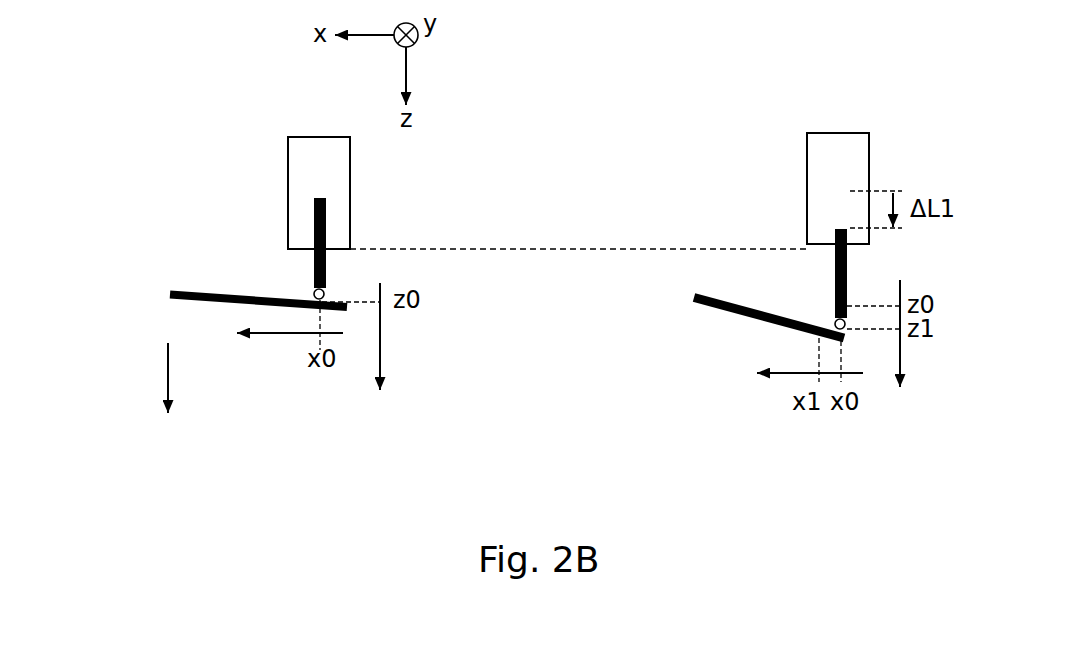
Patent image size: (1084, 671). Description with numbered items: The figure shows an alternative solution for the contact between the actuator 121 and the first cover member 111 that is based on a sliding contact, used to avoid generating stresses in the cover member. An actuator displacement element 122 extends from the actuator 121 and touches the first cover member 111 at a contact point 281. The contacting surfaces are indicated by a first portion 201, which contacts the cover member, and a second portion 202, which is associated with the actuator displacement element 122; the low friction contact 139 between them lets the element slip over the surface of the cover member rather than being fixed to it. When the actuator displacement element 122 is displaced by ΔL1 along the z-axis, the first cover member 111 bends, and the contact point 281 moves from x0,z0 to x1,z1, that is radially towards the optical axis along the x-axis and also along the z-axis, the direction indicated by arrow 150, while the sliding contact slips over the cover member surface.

The actuator 121 is at (350, 173).
The actuator displacement element 122 is at (330, 230).
The first cover member 111 is at (208, 292).
The contact point 281 is at (327, 296).
The laser beam 139 is at (316, 291).
The second portion 202 is at (312, 285).
The first portion 201 is at (313, 297).
The feed direction 150 is at (143, 378).